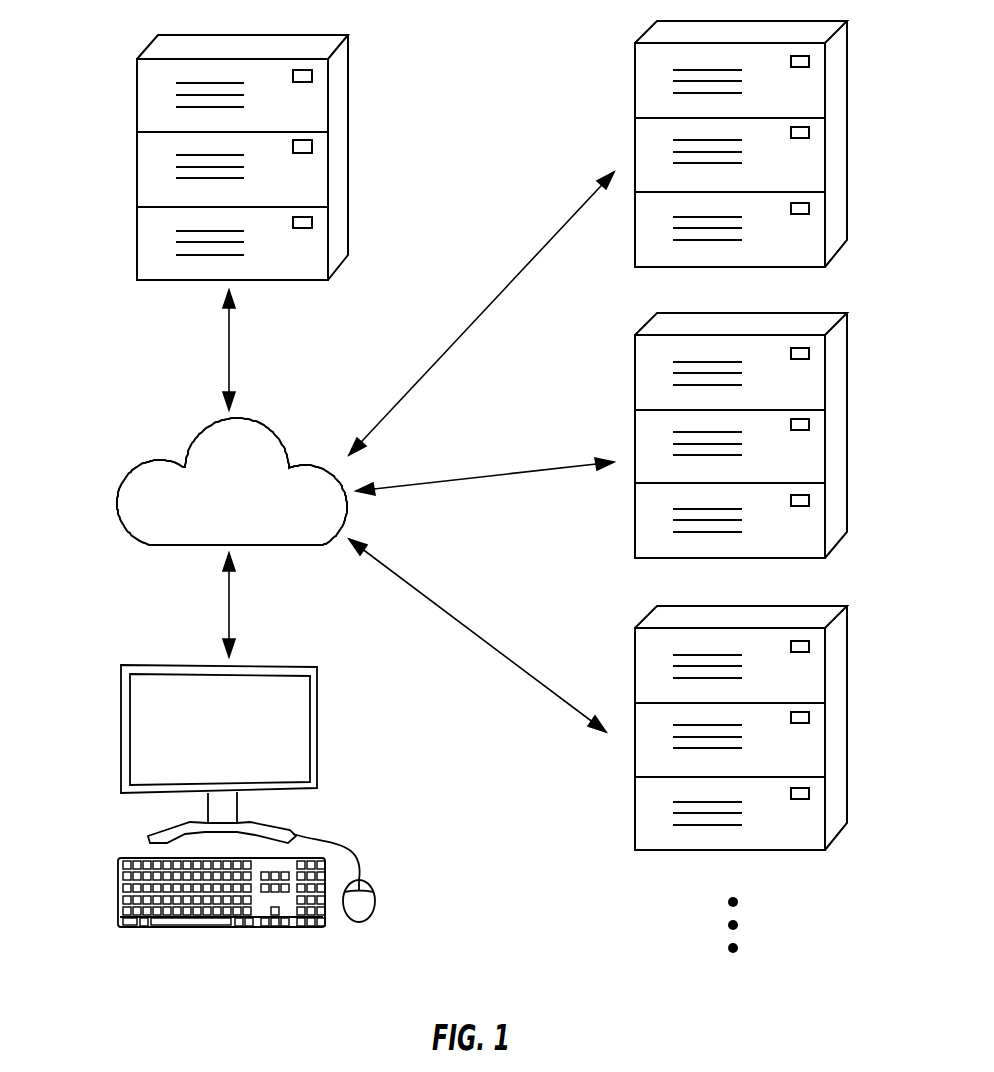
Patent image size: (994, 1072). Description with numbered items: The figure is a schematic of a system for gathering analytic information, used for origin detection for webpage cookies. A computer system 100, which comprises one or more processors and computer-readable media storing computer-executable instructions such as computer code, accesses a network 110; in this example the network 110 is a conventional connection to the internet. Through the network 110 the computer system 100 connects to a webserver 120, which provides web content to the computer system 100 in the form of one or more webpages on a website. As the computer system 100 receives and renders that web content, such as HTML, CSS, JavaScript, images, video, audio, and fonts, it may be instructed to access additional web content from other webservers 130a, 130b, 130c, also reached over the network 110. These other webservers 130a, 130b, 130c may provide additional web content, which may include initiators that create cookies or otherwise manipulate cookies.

The computer system 100 is at (108, 727).
The network 110 is at (248, 492).
The webserver 120 is at (122, 78).
The other webserver 130a is at (862, 113).
The other webserver 130b is at (855, 406).
The other webserver 130c is at (855, 681).